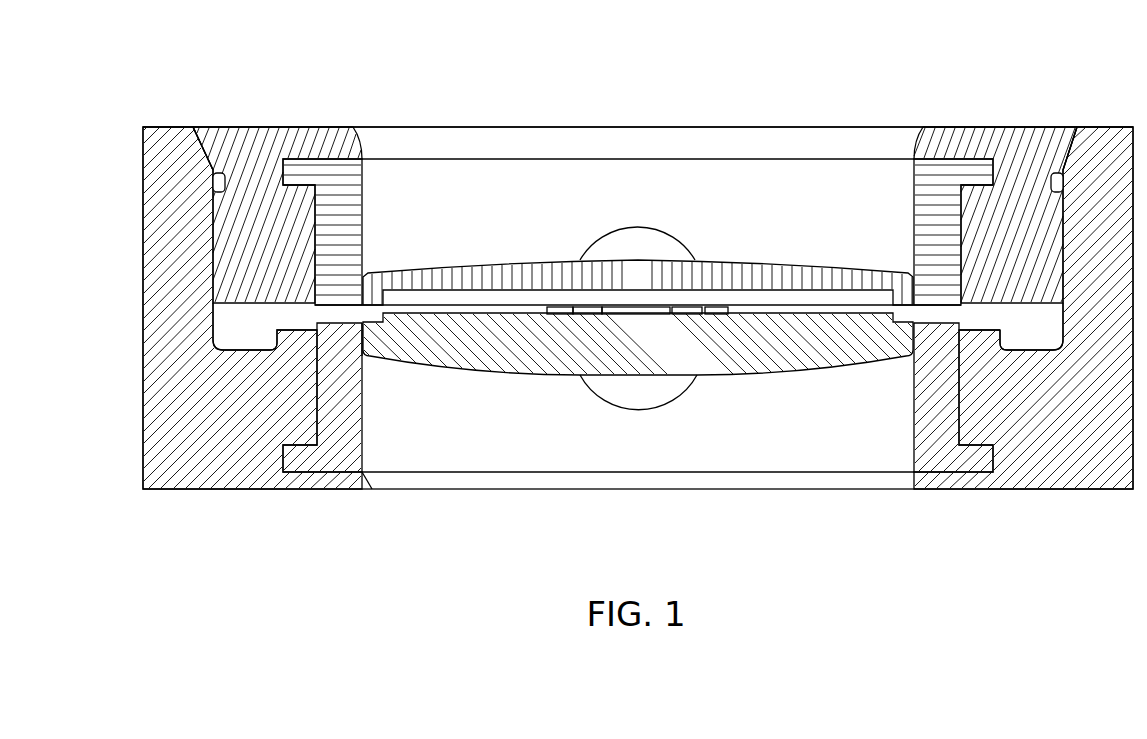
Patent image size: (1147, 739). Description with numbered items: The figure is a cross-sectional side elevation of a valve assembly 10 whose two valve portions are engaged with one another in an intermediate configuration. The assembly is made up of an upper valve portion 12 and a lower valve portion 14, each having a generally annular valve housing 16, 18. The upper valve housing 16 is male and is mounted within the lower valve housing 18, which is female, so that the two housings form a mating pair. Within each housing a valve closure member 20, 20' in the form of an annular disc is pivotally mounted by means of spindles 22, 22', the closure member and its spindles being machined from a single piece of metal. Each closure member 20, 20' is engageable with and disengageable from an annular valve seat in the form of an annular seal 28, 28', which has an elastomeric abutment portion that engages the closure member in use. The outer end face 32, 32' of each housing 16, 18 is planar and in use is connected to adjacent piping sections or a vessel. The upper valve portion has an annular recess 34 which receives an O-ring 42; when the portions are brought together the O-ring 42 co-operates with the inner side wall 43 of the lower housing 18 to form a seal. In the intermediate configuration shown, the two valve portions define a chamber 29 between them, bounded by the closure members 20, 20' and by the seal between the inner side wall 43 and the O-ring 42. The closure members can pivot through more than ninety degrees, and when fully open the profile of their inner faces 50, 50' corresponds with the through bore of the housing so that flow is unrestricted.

The valve assembly 10 is at (829, 79).
The upper valve portion 12 is at (330, 130).
The lower valve portion 14 is at (143, 298).
The valve housing 16 is at (328, 252).
The valve housing 18 is at (323, 430).
The valve closure member 20 is at (638, 282).
The valve closure member 20' is at (638, 344).
The spindle 22 is at (637, 217).
The spindle 22' is at (638, 419).
The annular seal 28 is at (610, 285).
The annular seal 28' is at (311, 371).
The chamber 29 is at (1027, 328).
The outer end face 32 is at (593, 418).
The outer end face 32' is at (981, 356).
The annular recess 34 is at (1075, 150).
The O-ring 42 is at (1052, 190).
The inner side wall 43 is at (1066, 323).
The inner face 50 is at (642, 264).
The inner face 50' is at (666, 336).